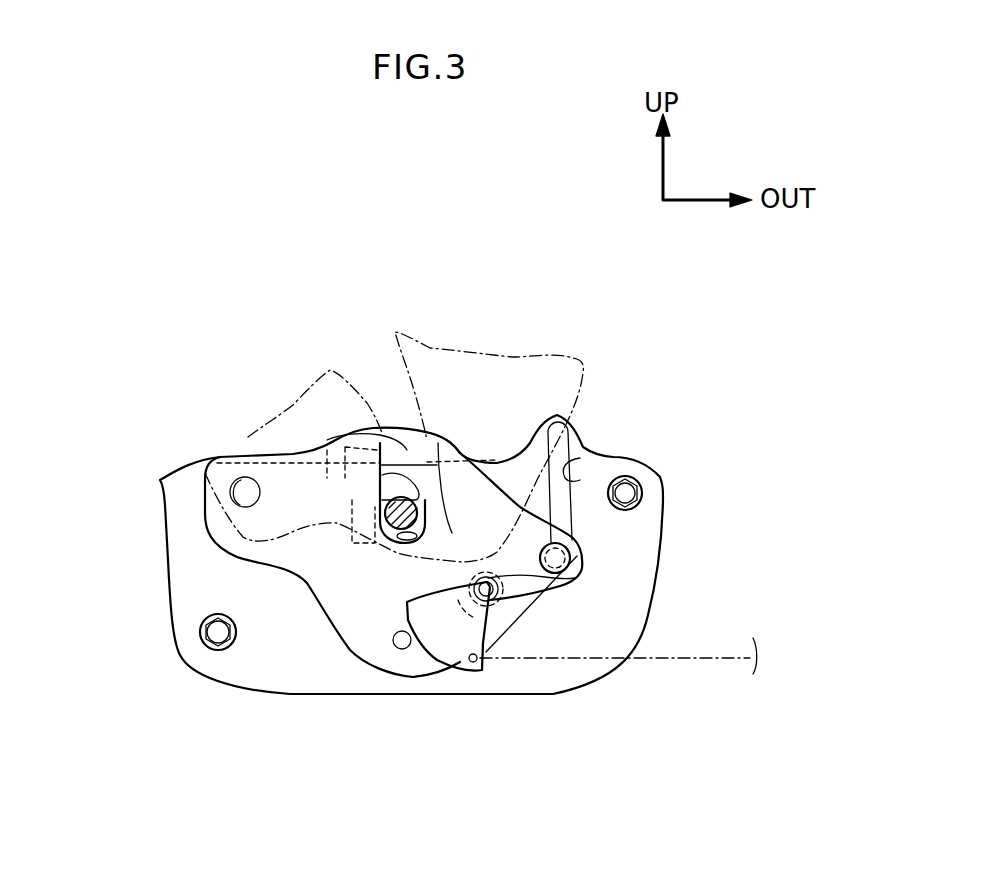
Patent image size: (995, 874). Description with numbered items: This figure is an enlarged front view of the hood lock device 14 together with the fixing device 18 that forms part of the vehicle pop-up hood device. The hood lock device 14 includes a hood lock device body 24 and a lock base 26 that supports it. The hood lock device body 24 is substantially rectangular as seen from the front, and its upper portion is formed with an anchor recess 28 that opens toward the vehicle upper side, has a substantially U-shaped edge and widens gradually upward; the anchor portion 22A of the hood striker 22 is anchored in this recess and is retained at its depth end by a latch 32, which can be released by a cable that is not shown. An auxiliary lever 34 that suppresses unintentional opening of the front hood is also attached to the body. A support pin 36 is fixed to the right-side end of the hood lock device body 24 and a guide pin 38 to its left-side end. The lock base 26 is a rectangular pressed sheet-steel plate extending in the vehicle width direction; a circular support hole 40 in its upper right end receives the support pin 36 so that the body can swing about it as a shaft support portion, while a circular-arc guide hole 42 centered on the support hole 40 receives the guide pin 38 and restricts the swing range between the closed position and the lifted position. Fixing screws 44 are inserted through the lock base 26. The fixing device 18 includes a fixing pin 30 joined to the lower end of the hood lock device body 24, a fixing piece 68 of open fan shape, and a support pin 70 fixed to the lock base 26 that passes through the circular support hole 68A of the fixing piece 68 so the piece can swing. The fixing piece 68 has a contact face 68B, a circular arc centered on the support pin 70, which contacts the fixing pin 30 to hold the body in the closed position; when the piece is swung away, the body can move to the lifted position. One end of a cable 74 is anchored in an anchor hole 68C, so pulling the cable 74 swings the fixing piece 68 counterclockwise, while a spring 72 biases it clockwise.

The hood lock device 14 is at (207, 292).
The fixing device 18 is at (455, 677).
The anchor portion 22A is at (499, 362).
The hood striker 22 is at (458, 443).
The hood lock device body 24 is at (585, 365).
The lock base 26 is at (607, 679).
The anchor recess 28 is at (423, 534).
The fixing pin 30 is at (393, 643).
The latch 32 is at (378, 482).
The auxiliary lever 34 is at (400, 427).
The support pin 36 is at (248, 477).
The guide pin 38 is at (572, 555).
The support hole 40 is at (160, 481).
The guide hole 42 is at (610, 458).
The fixing screws 44 is at (643, 495).
The fixing piece 68 is at (432, 594).
The support hole 68A is at (515, 594).
The contact face 68B is at (423, 650).
The anchor hole 68C is at (478, 663).
The support pin 70 is at (581, 580).
The spring 72 is at (533, 651).
The cable 74 is at (700, 658).